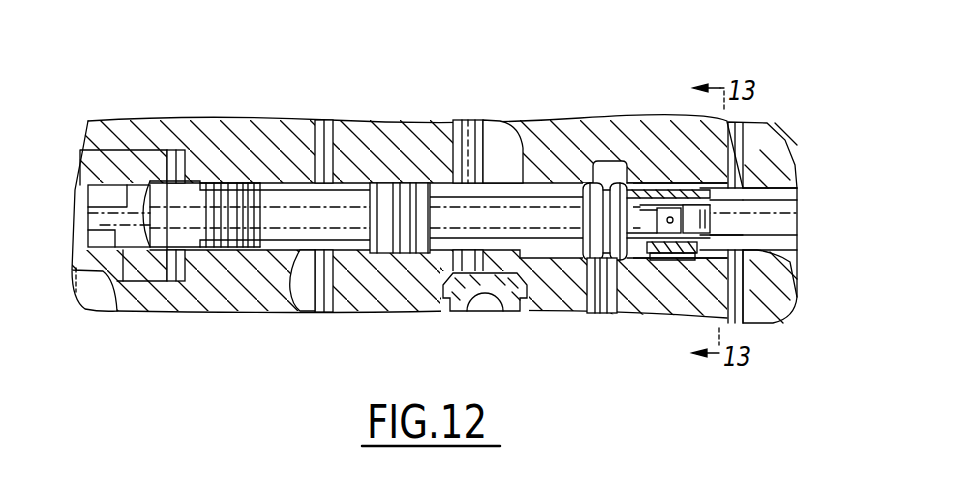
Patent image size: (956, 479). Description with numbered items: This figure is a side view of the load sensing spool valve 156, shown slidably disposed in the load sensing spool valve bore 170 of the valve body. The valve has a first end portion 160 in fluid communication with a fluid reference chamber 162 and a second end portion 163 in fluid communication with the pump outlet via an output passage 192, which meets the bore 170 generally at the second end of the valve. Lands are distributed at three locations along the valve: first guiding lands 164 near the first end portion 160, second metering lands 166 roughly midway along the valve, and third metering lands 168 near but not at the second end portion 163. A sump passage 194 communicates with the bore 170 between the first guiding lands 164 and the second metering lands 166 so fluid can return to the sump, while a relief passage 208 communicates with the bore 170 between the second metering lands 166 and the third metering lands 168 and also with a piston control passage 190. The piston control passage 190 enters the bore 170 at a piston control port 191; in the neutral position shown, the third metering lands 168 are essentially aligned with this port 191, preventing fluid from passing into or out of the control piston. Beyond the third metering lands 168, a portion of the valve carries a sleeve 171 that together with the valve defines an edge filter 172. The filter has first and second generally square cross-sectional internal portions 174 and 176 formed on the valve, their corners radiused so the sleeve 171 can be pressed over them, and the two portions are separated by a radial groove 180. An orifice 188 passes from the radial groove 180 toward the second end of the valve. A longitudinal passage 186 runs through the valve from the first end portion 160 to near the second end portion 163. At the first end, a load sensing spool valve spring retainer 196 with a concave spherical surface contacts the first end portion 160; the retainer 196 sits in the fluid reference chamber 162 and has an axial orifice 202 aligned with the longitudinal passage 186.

The load sensing spool valve 156 is at (330, 311).
The first end portion 160 is at (88, 122).
The fluid reference chamber 162 is at (82, 215).
The second end portion 163 is at (732, 222).
The first guiding lands 164 is at (283, 183).
The second metering lands 166 is at (420, 183).
The third metering lands 168 is at (618, 160).
The load sensing spool valve bore 170 is at (543, 315).
The sleeve 171 is at (650, 247).
The edge filter 172 is at (720, 282).
The first square cross-sectional internal portion 174 is at (713, 220).
The second square cross-sectional internal portion 176 is at (636, 190).
The radial groove 180 is at (673, 261).
The longitudinal passage 186 is at (285, 120).
The orifice 188 is at (743, 190).
The piston control passage 190 is at (610, 315).
The piston control port 191 is at (567, 127).
The output passage 192 is at (753, 124).
The sump passage 194 is at (335, 315).
The load sensing spool valve spring retainer 196 is at (147, 195).
The orifice 202 is at (110, 227).
The relief passage 208 is at (508, 265).